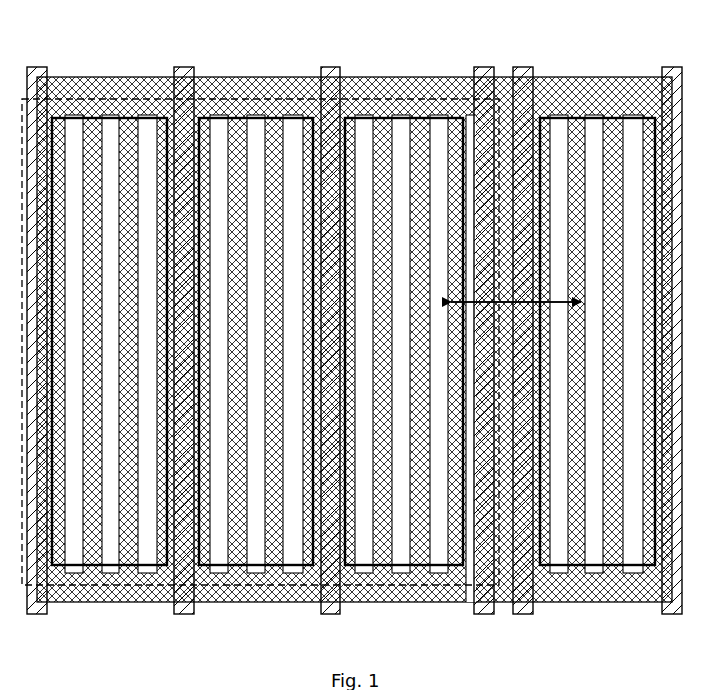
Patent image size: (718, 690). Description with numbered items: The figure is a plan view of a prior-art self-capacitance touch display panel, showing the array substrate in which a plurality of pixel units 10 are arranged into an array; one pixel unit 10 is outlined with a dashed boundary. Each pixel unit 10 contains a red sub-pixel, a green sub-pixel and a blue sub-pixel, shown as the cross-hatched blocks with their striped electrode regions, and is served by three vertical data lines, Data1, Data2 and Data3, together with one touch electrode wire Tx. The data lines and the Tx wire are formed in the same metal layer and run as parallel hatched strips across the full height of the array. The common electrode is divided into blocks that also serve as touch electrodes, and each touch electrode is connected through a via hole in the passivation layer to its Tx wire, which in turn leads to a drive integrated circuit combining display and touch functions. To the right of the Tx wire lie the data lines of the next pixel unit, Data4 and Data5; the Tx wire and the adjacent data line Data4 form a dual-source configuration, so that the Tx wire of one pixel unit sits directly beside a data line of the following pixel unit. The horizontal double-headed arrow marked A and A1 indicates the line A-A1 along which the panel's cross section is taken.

The pixel unit 10 is at (78, 98).
The data line Data1 is at (40, 328).
The data line Data2 is at (183, 328).
The data line Data3 is at (330, 328).
The data line Data4 is at (533, 328).
The data line Data5 is at (668, 328).
The touch electrode wire Tx is at (483, 328).
The section line end point A is at (507, 303).
The section line end point A1 is at (532, 303).